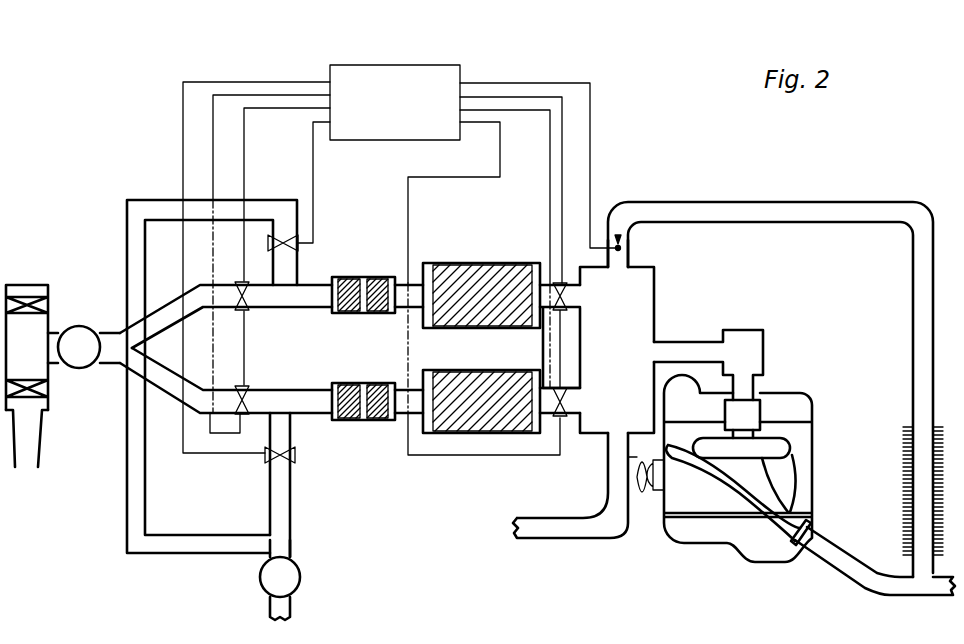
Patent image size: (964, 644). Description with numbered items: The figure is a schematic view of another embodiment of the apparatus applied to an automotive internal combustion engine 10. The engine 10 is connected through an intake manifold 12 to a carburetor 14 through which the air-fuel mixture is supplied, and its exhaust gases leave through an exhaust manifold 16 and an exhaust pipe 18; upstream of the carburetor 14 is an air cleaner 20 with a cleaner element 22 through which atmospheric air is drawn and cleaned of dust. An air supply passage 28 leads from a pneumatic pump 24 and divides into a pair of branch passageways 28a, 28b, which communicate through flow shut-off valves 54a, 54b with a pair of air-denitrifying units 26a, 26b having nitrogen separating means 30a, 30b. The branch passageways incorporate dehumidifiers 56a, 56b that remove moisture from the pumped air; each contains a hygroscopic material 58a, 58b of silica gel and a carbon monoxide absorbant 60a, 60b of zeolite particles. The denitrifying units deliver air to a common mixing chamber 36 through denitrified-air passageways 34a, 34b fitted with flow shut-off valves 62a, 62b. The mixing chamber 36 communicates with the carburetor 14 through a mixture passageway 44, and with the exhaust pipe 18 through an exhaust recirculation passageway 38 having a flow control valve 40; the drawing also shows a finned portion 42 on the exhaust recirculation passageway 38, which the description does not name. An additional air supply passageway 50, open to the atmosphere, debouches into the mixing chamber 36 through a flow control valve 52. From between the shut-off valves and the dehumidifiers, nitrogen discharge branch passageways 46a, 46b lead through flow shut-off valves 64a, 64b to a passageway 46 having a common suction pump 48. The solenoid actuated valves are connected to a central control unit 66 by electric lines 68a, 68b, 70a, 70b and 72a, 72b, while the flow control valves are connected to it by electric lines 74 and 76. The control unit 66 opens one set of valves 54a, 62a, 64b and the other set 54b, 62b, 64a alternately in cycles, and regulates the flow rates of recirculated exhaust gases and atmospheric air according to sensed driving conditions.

The internal combustion engine 10 is at (690, 507).
The intake manifold 12 is at (777, 447).
The carburetor 14 is at (752, 412).
The exhaust manifold 16 is at (790, 507).
The exhaust pipe 18 is at (852, 552).
The air cleaner 20 is at (28, 285).
The cleaner element 22 is at (32, 377).
The pneumatic pump 24 is at (82, 326).
The air-denitrifying unit 26a is at (450, 258).
The air-denitrifying unit 26b is at (447, 442).
The air supply passage 28 is at (107, 366).
The branch passageway 28a is at (167, 298).
The branch passageway 28b is at (160, 400).
The nitrogen separating means 30a is at (428, 310).
The nitrogen separating means 30b is at (537, 373).
The denitrified-air passageway 34a is at (560, 280).
The denitrified-air passageway 34b is at (570, 420).
The mixing chamber 36 is at (657, 307).
The exhaust recirculation passageway 38 is at (843, 223).
The flow control valve 40 is at (623, 240).
The heat exchanger fins 42 is at (905, 458).
The mixture passageway 44 is at (747, 328).
The passageway 46 is at (292, 559).
The nitrogen discharge branch passageway 46a is at (275, 200).
The nitrogen discharge branch passageway 46b is at (283, 518).
The suction pump 48 is at (300, 584).
The additional air supply passageway 50 is at (550, 530).
The flow control valve 52 is at (618, 457).
The flow shut-off valve 54a is at (242, 312).
The flow shut-off valve 54b is at (242, 386).
The dehumidifier 56a is at (348, 320).
The dehumidifier 56b is at (375, 383).
The hygroscopic material 58a is at (348, 277).
The hygroscopic material 58b is at (345, 420).
The carbon monoxide absorbant 60a is at (380, 277).
The carbon monoxide absorbant 60b is at (382, 420).
The flow shut-off valve 62a is at (565, 318).
The flow shut-off valve 62b is at (557, 420).
The flow shut-off valve 64a is at (298, 243).
The flow shut-off valve 64b is at (270, 462).
The central control unit 66 is at (377, 140).
The electric line 68a is at (263, 108).
The electric line 68b is at (309, 95).
The electric line 70a is at (562, 112).
The electric line 70b is at (550, 135).
The electric line 72a is at (313, 155).
The electric line 72b is at (183, 144).
The electric line 74 is at (590, 162).
The electric line 76 is at (500, 147).